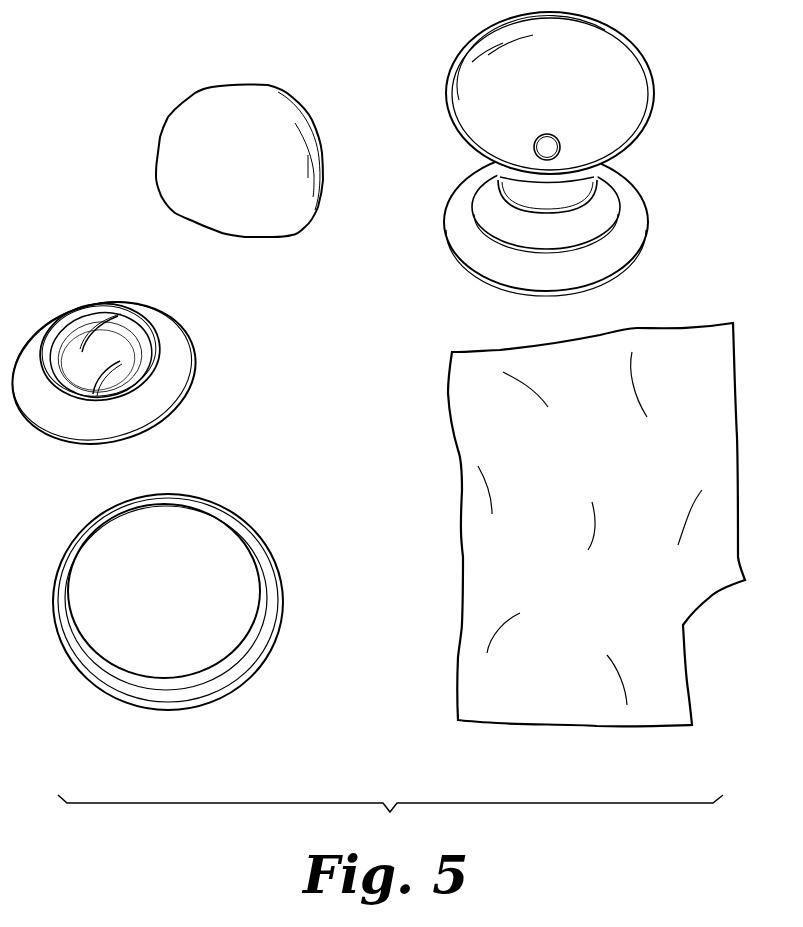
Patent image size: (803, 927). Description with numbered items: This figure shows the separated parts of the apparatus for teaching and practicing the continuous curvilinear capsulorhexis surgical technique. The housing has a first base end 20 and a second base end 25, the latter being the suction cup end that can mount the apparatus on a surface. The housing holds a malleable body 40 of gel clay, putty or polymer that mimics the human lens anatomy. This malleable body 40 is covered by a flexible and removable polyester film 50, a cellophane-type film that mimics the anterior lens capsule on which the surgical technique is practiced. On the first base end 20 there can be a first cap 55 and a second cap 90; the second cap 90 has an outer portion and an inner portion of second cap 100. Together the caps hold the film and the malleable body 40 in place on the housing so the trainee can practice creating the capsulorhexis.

The first base end 20 is at (607, 78).
The second base end 25 is at (632, 205).
The malleable body 40 is at (282, 120).
The polyester film 50 is at (691, 370).
The first cap 55 is at (242, 532).
The second cap 90 is at (172, 370).
The inner portion of second cap 100 is at (115, 349).